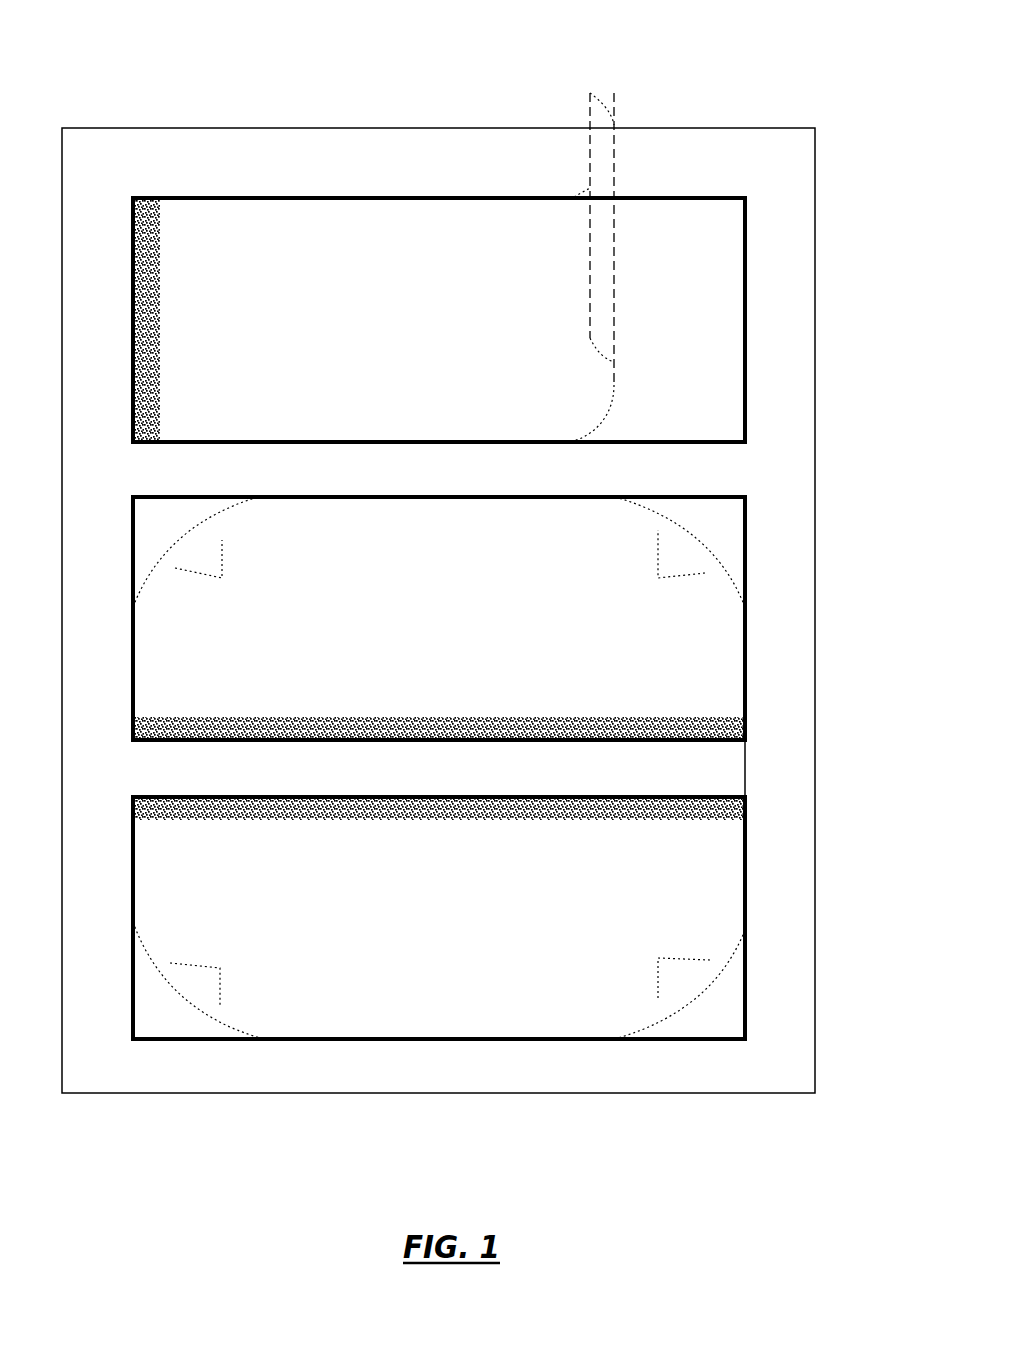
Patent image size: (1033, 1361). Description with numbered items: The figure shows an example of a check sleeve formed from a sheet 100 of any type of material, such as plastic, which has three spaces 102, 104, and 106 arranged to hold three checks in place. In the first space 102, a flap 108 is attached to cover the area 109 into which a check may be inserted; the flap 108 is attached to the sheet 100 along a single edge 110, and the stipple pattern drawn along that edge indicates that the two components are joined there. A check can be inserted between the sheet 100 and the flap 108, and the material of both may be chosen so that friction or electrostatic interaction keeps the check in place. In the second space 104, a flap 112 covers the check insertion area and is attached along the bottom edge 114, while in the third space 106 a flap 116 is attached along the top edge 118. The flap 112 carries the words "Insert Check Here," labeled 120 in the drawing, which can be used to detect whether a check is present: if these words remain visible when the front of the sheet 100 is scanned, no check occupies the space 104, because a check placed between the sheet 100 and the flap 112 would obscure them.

The sheet 100 is at (655, 118).
The space 102 is at (752, 322).
The space 104 is at (753, 590).
The space 106 is at (752, 893).
The flap 108 is at (592, 272).
The area 109 is at (646, 207).
The edge 110 is at (146, 333).
The flap 112 is at (178, 565).
The bottom edge 114 is at (388, 722).
The flap 116 is at (200, 972).
The top edge 118 is at (415, 812).
The instruction text 120 is at (467, 590).